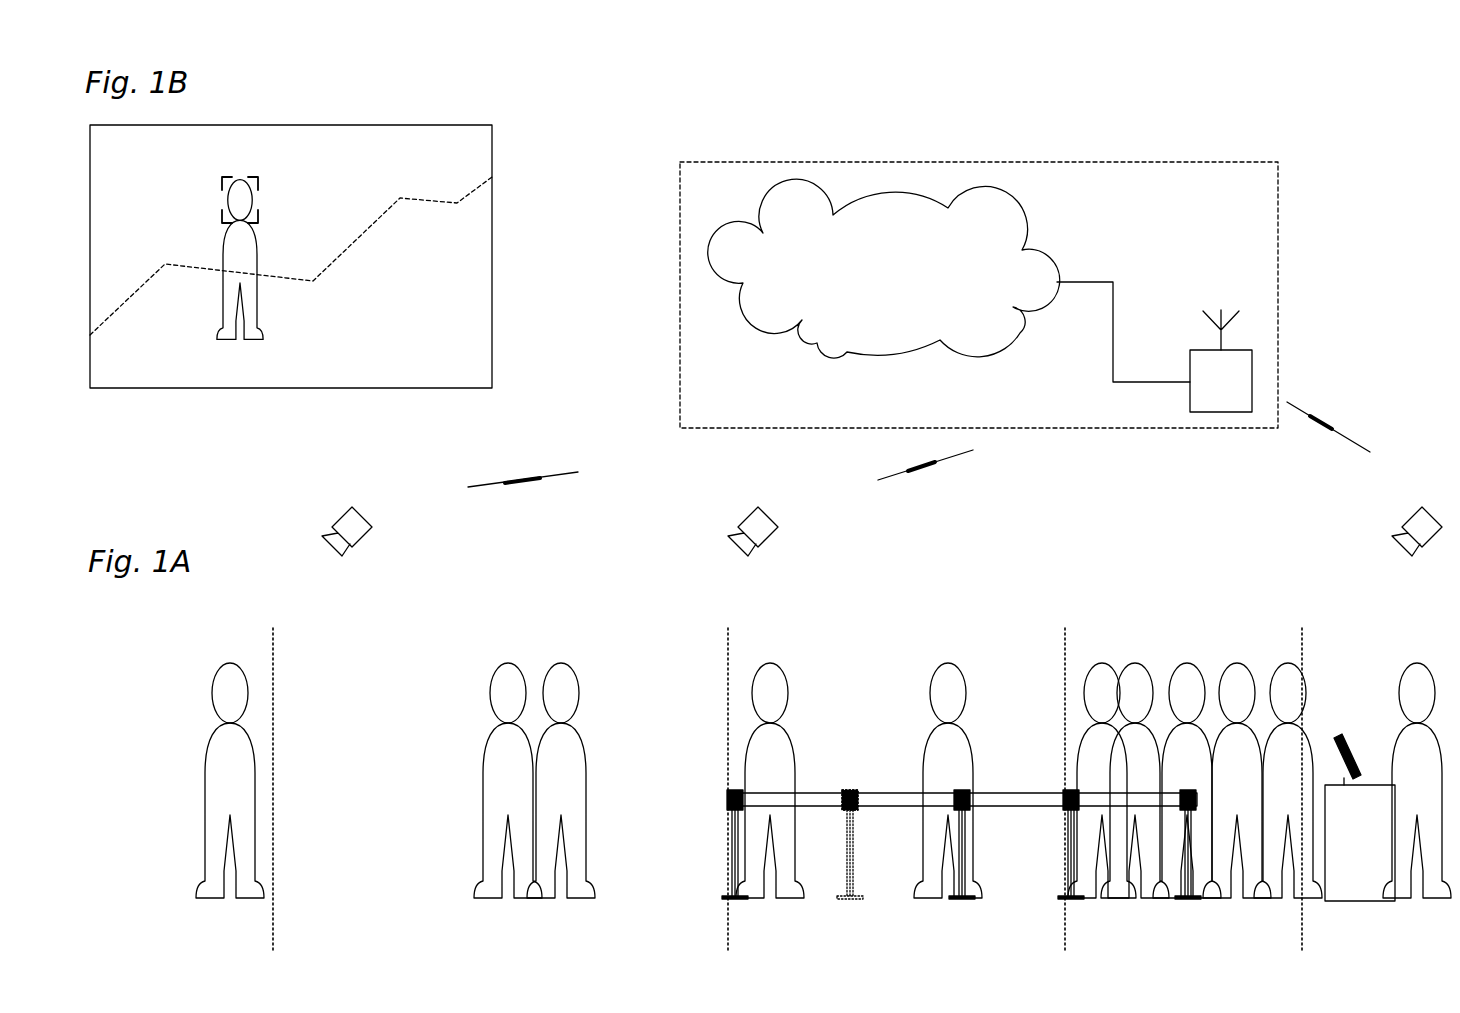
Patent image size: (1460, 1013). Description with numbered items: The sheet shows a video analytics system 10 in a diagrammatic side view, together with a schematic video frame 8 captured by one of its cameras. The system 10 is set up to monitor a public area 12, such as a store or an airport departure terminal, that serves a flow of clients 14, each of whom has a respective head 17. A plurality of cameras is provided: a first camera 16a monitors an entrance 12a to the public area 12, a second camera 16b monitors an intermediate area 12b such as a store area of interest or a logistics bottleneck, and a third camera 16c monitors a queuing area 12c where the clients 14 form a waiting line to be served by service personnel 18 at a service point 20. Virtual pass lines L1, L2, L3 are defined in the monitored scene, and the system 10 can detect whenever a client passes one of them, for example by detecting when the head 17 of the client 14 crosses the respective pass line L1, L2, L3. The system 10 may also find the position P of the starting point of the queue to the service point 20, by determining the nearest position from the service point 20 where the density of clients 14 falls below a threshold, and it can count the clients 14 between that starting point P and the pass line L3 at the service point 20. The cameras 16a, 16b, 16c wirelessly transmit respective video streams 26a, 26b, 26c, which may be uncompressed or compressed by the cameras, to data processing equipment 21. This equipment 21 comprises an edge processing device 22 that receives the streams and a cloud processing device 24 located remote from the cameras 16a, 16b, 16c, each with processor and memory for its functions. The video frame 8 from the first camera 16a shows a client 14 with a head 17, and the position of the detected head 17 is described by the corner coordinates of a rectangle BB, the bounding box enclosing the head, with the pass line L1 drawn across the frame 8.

In FIG. 1B, the video frame 8 is at (274, 126).
In FIG. 1A, the video analytics system 10 is at (614, 131).
In FIG. 1A, the public area 12 is at (470, 568).
In FIG. 1A, the entrance 12a is at (178, 897).
In FIG. 1A, the intermediate area 12b is at (452, 896).
In FIG. 1A, the queuing area 12c is at (873, 899).
In FIG. 1B, the clients 14 is at (240, 279).
In FIG. 1A, the clients 14 is at (759, 810).
In FIG. 1A, the first camera 16a is at (345, 518).
In FIG. 1A, the second camera 16b is at (752, 518).
In FIG. 1A, the third camera 16c is at (1415, 518).
In FIG. 1B, the head 17 is at (240, 200).
In FIG. 1A, the head 17 is at (823, 693).
In FIG. 1A, the service personnel 18 is at (1417, 810).
In FIG. 1A, the service point 20 is at (1336, 891).
In FIG. 1A, the data processing equipment 21 is at (1278, 250).
In FIG. 1A, the edge processing device 22 is at (1221, 361).
In FIG. 1A, the cloud processing device 24 is at (884, 268).
In FIG. 1A, the video stream 26a is at (528, 481).
In FIG. 1A, the video stream 26b is at (950, 458).
In FIG. 1A, the video stream 26c is at (1330, 426).
In FIG. 1B, the bounding box BB is at (224, 177).
In FIG. 1B, the first pass line L1 is at (360, 237).
In FIG. 1A, the first pass line L1 is at (276, 776).
In FIG. 1A, the second pass line L2 is at (731, 776).
In FIG. 1A, the third pass line L3 is at (1306, 776).
In FIG. 1A, the queue starting point position P is at (1066, 775).